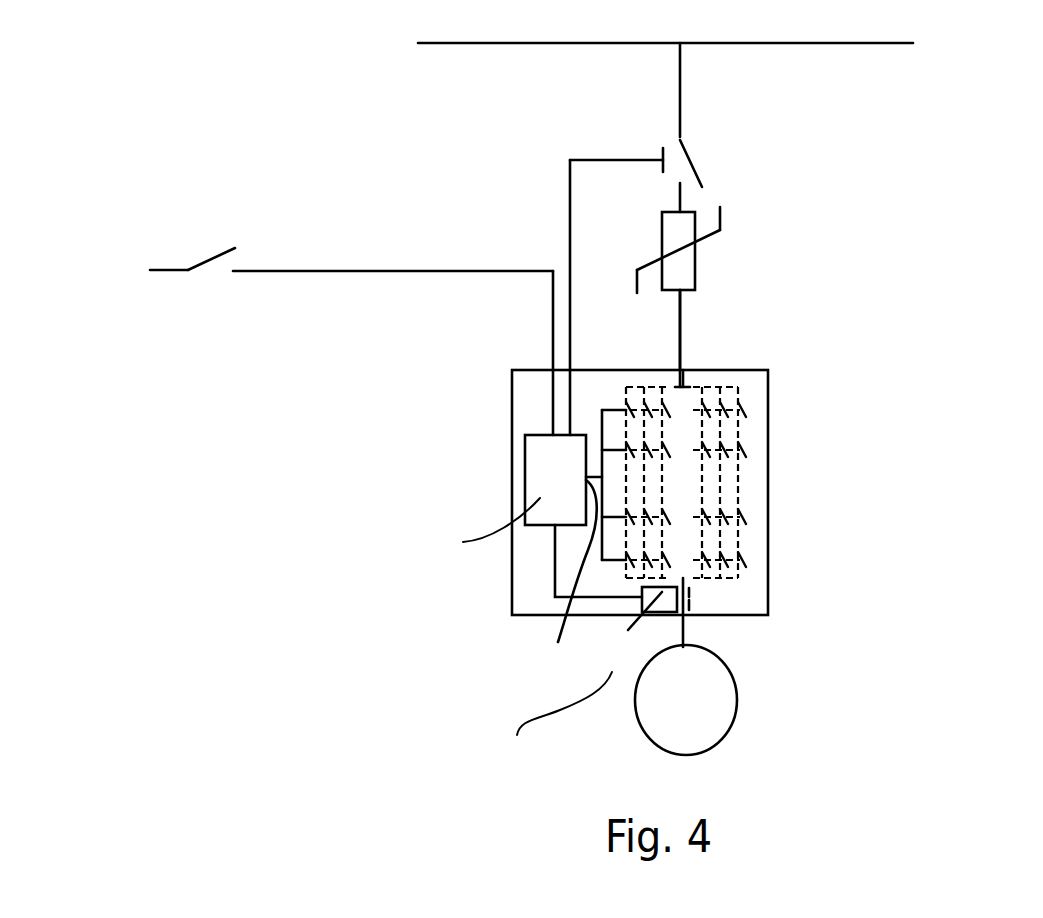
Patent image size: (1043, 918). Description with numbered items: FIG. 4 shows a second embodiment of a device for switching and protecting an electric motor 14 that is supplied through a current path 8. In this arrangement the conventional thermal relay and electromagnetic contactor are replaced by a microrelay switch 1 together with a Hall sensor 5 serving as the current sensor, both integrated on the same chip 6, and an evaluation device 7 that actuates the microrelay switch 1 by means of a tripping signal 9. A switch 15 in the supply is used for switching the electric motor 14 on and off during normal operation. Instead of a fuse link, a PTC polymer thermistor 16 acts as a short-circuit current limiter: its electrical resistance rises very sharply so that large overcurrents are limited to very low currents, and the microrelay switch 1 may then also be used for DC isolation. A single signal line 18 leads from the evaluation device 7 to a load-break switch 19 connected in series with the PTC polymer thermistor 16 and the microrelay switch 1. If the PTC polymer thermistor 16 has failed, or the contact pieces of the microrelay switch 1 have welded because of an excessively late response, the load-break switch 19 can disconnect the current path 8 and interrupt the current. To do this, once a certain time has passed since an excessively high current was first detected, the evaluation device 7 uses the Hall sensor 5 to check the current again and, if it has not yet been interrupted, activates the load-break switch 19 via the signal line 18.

The microrelay switch 1 is at (747, 432).
The Hall sensor 5 is at (551, 682).
The chip 6 is at (532, 407).
The evaluation device 7 is at (543, 466).
The current path 8 is at (685, 345).
The tripping signal 9 is at (567, 583).
The electric motor 14 is at (712, 692).
The switch 15 is at (196, 259).
The PTC polymer thermistor 16 is at (695, 267).
The signal line 18 is at (616, 275).
The load-break switch 19 is at (693, 163).